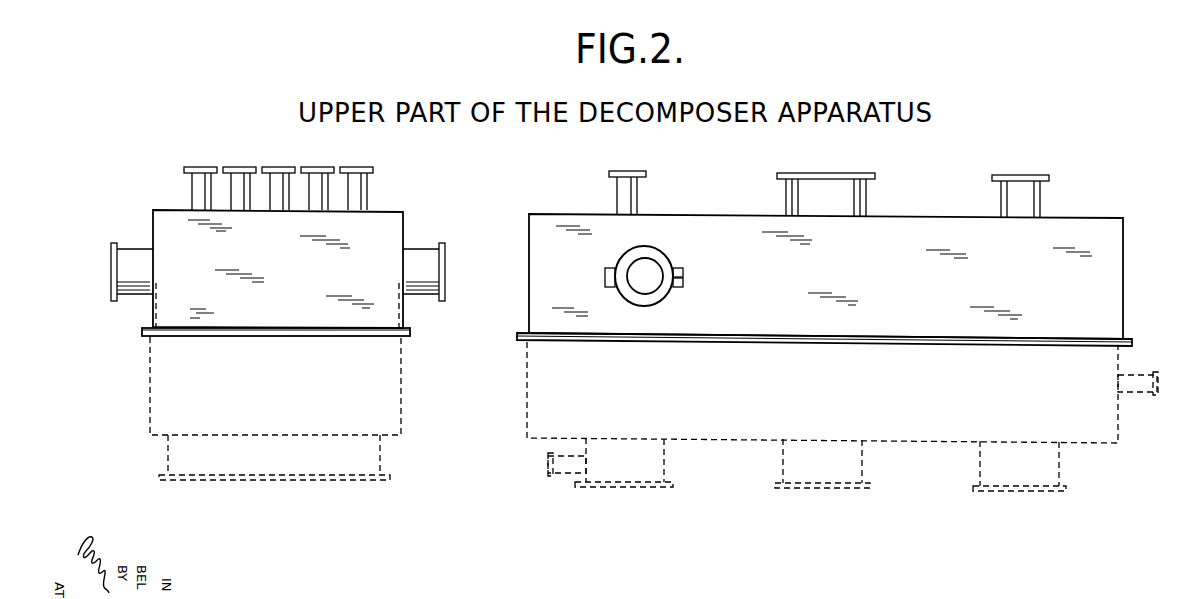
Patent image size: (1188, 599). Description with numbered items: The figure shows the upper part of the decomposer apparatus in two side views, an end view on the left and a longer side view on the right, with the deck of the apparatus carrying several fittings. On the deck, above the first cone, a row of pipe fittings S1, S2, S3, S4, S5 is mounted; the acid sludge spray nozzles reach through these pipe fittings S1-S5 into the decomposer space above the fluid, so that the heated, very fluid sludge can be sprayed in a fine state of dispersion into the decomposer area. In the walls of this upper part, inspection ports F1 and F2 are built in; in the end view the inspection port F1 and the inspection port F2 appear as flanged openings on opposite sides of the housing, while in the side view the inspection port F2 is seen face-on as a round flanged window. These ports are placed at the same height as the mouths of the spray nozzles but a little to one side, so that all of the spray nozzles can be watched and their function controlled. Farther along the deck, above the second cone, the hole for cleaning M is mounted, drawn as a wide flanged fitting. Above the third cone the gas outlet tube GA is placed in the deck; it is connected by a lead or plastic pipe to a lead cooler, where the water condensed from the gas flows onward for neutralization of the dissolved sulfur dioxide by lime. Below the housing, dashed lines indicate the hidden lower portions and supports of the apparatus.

The pipe fitting S1 is at (200, 174).
The pipe fitting S2 is at (239, 174).
The pipe fitting S3 is at (278, 174).
The pipe fitting S4 is at (317, 174).
The pipe fitting S5 is at (356, 174).
The pipe fittings S1-S5 is at (632, 179).
The inspection port F1 is at (120, 272).
The inspection port F2 is at (543, 274).
The hole for cleaning M is at (826, 181).
The gas outlet tube GA is at (1020, 183).